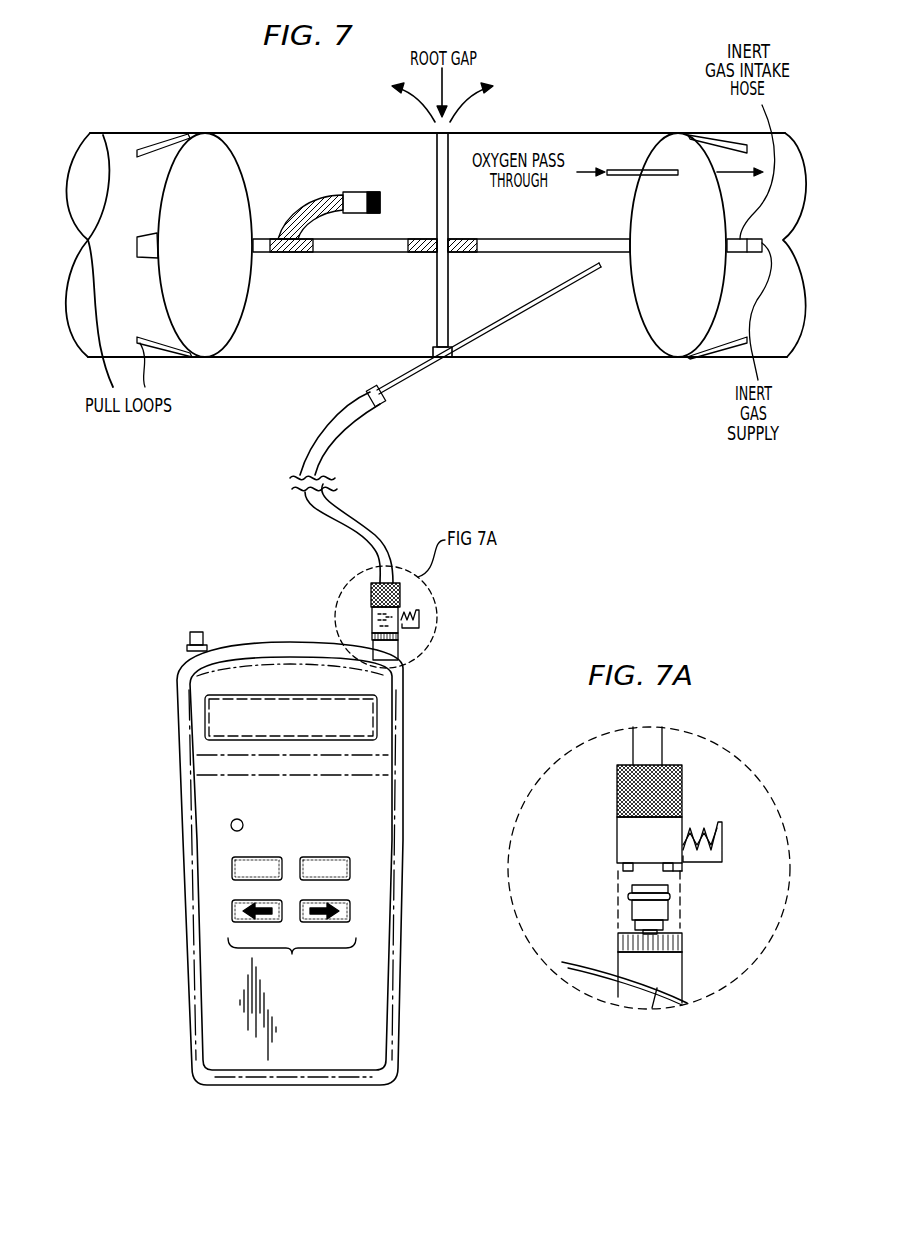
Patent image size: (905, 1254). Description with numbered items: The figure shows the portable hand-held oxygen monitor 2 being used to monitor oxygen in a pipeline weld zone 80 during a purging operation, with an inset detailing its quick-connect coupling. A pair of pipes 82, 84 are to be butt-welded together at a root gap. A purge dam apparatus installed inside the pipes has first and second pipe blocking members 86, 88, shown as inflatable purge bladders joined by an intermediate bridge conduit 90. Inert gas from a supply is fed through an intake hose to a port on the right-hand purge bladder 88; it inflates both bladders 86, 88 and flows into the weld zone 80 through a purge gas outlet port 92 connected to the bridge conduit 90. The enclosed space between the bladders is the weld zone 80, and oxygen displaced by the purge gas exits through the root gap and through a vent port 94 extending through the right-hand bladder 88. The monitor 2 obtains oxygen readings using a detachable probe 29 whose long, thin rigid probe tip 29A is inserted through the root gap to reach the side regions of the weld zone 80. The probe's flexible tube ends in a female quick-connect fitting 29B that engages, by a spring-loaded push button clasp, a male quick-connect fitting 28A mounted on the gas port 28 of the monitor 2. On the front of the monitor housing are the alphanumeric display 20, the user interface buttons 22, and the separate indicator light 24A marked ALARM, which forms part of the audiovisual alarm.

In FIG. 7, the portable oxygen monitor 2 is at (265, 632).
In FIG. 7, the alphanumeric display 20 is at (205, 718).
In FIG. 7, the user interface buttons 22 is at (292, 918).
In FIG. 7, the indicator light 24A is at (231, 825).
In FIG. 7, the gas port 28 is at (407, 652).
In FIG. 7A, the male quick-connect fitting 28A is at (640, 908).
In FIG. 7, the gas sampling probe 29 is at (342, 423).
In FIG. 7, the probe tip 29A is at (600, 268).
In FIG. 7, the female quick-connect fitting 29B is at (400, 598).
In FIG. 7A, the female quick-connect fitting 29B is at (627, 842).
In FIG. 7, the weld zone 80 is at (514, 288).
In FIG. 7, the pipe 82 is at (338, 357).
In FIG. 7, the pipe 84 is at (576, 357).
In FIG. 7, the first pipe blocking member 86 is at (217, 157).
In FIG. 7, the second pipe blocking member 88 is at (667, 155).
In FIG. 7, the bridge conduit 90 is at (577, 247).
In FIG. 7, the purge gas outlet port 92 is at (375, 192).
In FIG. 7, the vent port 94 is at (622, 170).